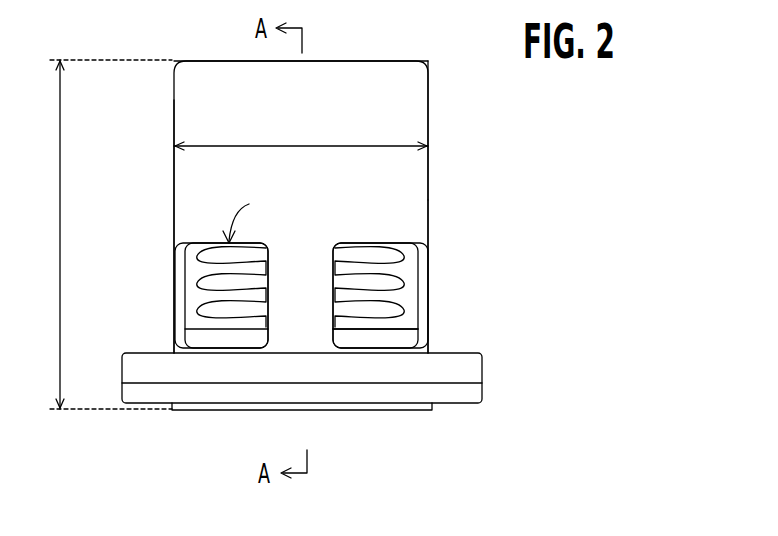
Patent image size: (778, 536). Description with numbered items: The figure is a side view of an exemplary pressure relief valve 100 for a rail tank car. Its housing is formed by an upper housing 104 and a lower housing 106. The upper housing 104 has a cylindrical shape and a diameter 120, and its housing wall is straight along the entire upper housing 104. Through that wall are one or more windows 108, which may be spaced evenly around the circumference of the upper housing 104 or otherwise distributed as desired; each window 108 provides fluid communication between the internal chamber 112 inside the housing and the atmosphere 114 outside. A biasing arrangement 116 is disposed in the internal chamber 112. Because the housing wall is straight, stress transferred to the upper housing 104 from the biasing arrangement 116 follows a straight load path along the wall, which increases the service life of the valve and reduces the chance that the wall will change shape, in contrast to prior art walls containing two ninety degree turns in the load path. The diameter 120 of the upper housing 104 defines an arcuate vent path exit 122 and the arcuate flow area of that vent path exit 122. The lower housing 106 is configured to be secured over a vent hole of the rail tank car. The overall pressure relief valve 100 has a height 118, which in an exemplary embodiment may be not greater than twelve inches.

The pressure relief valve 100 is at (518, 160).
The upper housing 104 is at (428, 108).
The lower housing 106 is at (482, 393).
The window 108 is at (196, 278).
The internal chamber 112 is at (404, 295).
The atmosphere 114 is at (545, 229).
The biasing arrangement 116 is at (405, 328).
The height 118 is at (60, 233).
The diameter 120 is at (304, 146).
The arcuate vent path exit 122 is at (254, 218).